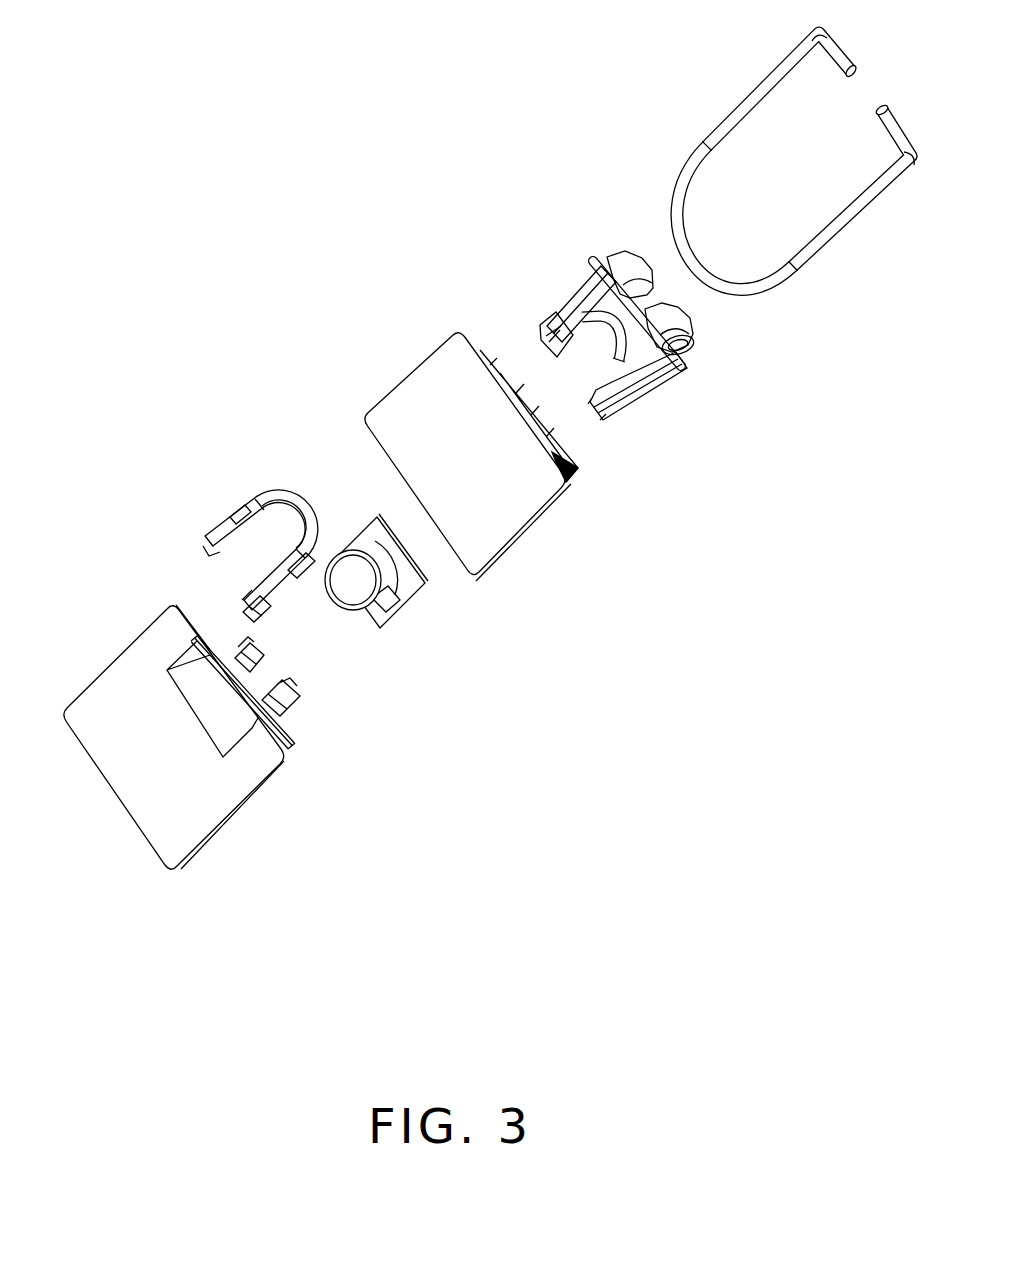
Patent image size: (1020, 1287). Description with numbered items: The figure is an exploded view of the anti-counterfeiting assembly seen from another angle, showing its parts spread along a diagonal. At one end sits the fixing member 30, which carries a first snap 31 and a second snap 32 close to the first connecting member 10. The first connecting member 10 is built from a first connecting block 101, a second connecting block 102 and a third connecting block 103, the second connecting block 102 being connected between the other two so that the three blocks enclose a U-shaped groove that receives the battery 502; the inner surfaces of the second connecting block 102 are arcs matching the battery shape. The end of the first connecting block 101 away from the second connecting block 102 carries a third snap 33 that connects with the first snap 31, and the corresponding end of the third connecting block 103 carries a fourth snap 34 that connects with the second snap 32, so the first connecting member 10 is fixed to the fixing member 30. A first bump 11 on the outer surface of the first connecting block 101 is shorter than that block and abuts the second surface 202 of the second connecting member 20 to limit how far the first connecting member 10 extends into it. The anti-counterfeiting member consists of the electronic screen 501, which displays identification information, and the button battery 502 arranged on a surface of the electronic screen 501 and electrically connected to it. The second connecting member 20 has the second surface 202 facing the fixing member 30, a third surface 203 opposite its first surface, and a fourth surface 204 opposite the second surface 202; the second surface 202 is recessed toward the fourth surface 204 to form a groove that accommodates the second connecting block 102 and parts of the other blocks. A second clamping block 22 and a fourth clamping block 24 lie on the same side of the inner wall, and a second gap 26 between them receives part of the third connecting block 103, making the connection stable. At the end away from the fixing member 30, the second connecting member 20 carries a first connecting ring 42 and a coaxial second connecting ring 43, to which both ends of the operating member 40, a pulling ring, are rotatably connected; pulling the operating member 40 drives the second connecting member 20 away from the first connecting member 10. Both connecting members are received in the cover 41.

The first connecting member 10 is at (207, 428).
The first connecting block 101 is at (272, 577).
The second connecting block 102 is at (292, 495).
The third connecting block 103 is at (218, 533).
The first bump 11 is at (272, 602).
The second connecting member 20 is at (672, 374).
The second clamping block 22 is at (538, 333).
The fourth clamping block 24 is at (568, 312).
The second gap 26 is at (542, 327).
The second surface 202 is at (597, 420).
The third surface 203 is at (630, 357).
The fourth surface 204 is at (660, 302).
The fixing member 30 is at (110, 683).
The first snap 31 is at (293, 702).
The second snap 32 is at (257, 655).
The third snap 33 is at (247, 602).
The fourth snap 34 is at (207, 550).
The operating member 40 is at (820, 238).
The cover 41 is at (522, 513).
The first connecting ring 42 is at (625, 258).
The second connecting ring 43 is at (690, 340).
The electronic screen 501 is at (408, 582).
The battery 502 is at (360, 580).